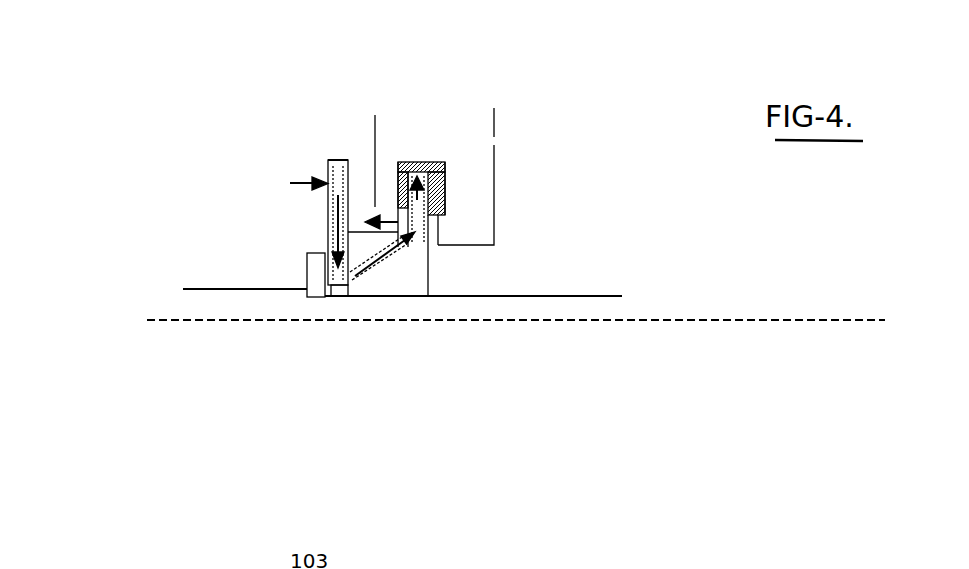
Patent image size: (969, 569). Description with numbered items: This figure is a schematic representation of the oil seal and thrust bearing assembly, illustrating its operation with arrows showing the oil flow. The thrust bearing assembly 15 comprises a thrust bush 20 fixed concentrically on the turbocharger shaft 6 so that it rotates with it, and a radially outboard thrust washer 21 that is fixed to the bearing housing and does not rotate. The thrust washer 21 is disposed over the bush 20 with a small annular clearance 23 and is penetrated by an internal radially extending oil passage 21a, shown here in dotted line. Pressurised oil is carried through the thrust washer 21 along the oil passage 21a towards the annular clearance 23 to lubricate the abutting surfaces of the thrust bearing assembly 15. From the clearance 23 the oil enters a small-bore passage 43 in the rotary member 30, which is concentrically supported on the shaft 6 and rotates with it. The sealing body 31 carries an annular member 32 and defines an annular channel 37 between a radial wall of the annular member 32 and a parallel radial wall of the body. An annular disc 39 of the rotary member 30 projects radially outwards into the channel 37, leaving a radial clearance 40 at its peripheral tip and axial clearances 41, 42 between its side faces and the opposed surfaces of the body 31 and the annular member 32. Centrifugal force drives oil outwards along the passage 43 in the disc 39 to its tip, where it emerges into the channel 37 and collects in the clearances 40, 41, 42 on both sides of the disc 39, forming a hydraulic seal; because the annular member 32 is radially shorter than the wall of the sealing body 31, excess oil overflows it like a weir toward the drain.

The turbocharger shaft 6 is at (190, 305).
The thrust bearing assembly 15 is at (318, 148).
The thrust bush 20 is at (288, 258).
The thrust washer 21 is at (328, 165).
The oil passage 21a is at (332, 168).
The annular clearance 23 is at (329, 297).
The rotary member 30 is at (418, 272).
The sealing body 31 is at (495, 145).
The annular member 32 is at (366, 192).
The annular channel 37 is at (420, 163).
The annular disc 39 is at (432, 223).
The radial clearance 40 is at (416, 163).
The axial clearance 41 is at (445, 180).
The axial clearance 42 is at (398, 168).
The small-bore passage 43 is at (418, 236).